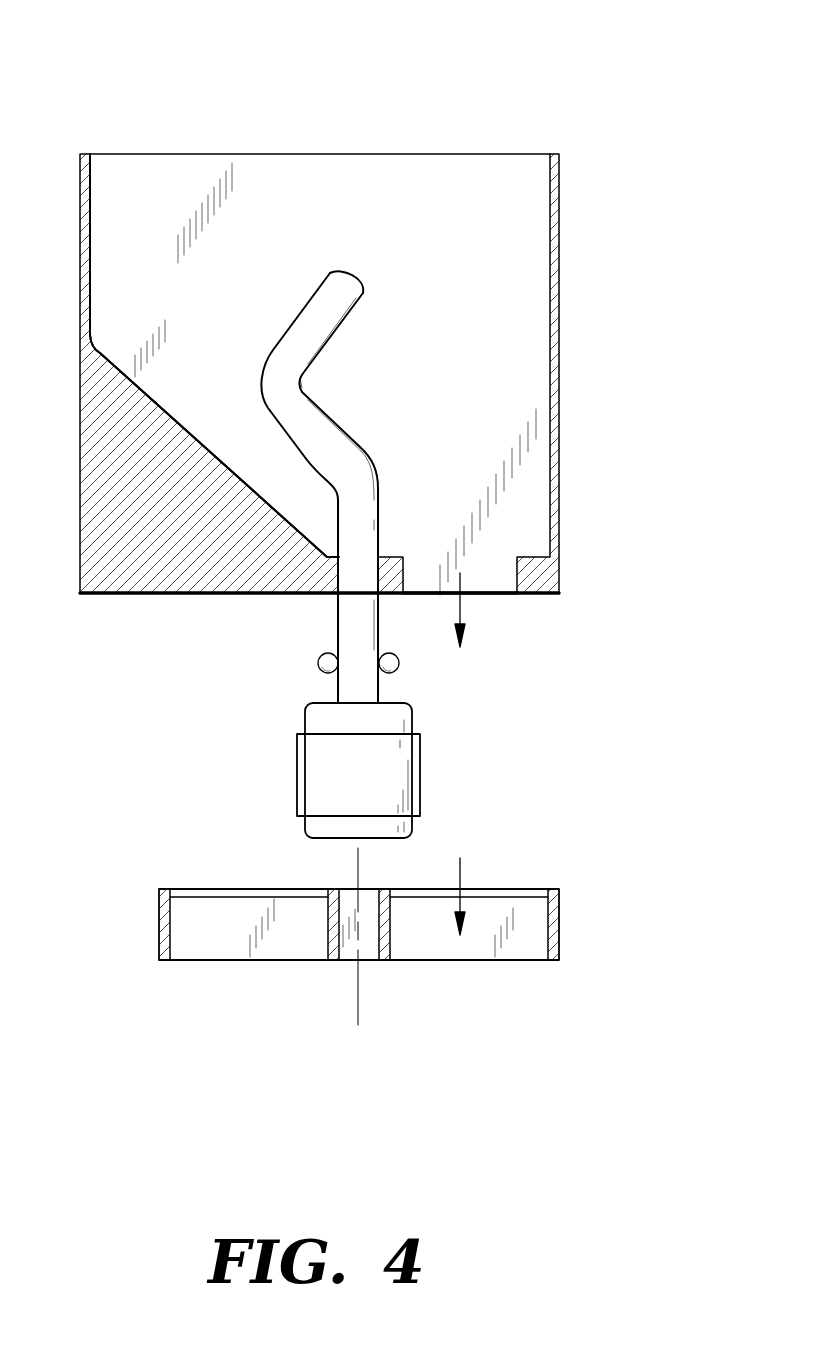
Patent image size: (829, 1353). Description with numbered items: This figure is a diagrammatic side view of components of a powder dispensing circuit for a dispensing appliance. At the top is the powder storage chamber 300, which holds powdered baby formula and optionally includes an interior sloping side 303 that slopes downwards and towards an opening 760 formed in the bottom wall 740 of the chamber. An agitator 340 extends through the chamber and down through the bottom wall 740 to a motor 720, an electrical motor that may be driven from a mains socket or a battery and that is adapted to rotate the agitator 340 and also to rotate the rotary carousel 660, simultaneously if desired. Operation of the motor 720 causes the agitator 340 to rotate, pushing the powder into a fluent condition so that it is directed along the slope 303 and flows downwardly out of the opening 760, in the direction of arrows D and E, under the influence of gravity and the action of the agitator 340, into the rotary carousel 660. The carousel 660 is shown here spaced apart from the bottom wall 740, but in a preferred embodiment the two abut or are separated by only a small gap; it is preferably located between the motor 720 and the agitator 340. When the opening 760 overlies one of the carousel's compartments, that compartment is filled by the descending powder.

The powder storage chamber 300 is at (483, 117).
The interior sloping side 303 is at (193, 423).
The agitator 340 is at (320, 290).
The bottom wall 740 is at (108, 595).
The opening 760 is at (493, 582).
The motor 720 is at (421, 757).
The rotary carousel 660 is at (583, 889).
The arrow D is at (460, 573).
The arrow E is at (460, 869).